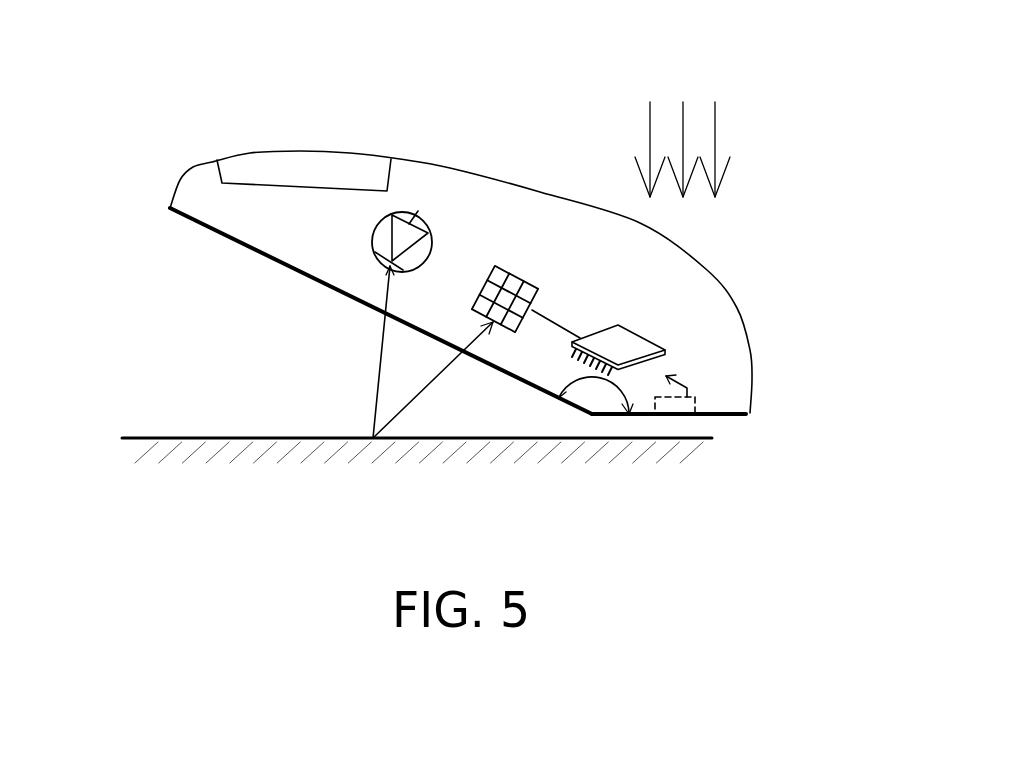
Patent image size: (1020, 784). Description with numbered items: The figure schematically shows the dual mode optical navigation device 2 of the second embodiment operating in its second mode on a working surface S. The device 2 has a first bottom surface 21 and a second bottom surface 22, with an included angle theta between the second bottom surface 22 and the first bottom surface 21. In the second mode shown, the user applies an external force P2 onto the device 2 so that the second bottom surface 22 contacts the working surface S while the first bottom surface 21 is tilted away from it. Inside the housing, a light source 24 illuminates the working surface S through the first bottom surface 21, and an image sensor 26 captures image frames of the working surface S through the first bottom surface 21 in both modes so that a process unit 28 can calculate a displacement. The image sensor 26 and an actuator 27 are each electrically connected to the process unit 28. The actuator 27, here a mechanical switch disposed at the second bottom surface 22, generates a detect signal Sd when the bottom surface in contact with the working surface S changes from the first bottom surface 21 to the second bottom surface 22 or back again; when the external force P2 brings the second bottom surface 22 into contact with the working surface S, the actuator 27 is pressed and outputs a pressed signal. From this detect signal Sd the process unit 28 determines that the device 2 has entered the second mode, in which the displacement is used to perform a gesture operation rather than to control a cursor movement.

The dual mode optical navigation device 2 is at (232, 135).
The first bottom surface 21 is at (192, 222).
The second bottom surface 22 is at (722, 415).
The light source 24 is at (429, 232).
The image sensor 26 is at (516, 277).
The actuator 27 is at (682, 408).
The process unit 28 is at (643, 335).
The detect signal Sd is at (688, 373).
The external force P2 is at (682, 125).
The working surface S is at (630, 452).
The included angle theta is at (596, 395).